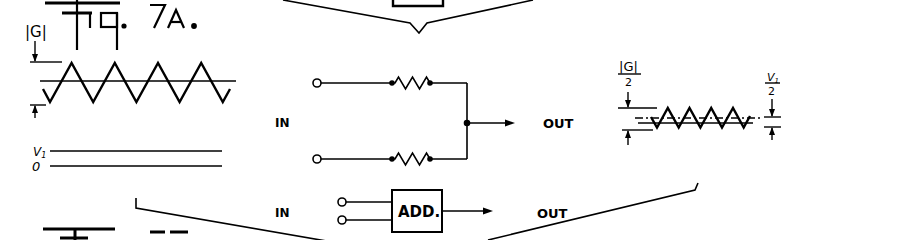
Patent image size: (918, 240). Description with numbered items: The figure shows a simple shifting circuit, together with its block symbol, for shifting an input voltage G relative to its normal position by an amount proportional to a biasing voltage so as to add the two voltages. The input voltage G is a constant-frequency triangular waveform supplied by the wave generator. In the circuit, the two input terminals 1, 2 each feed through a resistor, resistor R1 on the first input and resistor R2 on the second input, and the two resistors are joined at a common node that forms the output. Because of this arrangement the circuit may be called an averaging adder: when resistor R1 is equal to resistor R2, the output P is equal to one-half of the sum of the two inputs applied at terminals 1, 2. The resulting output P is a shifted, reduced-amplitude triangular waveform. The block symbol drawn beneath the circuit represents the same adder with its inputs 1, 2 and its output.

The triangular waveform input voltage G is at (163, 72).
The output voltage P is at (713, 112).
The first resistor R1 is at (408, 78).
The second resistor R2 is at (408, 155).
The first input terminal 1 is at (333, 137).
The second input terminal 2 is at (333, 195).